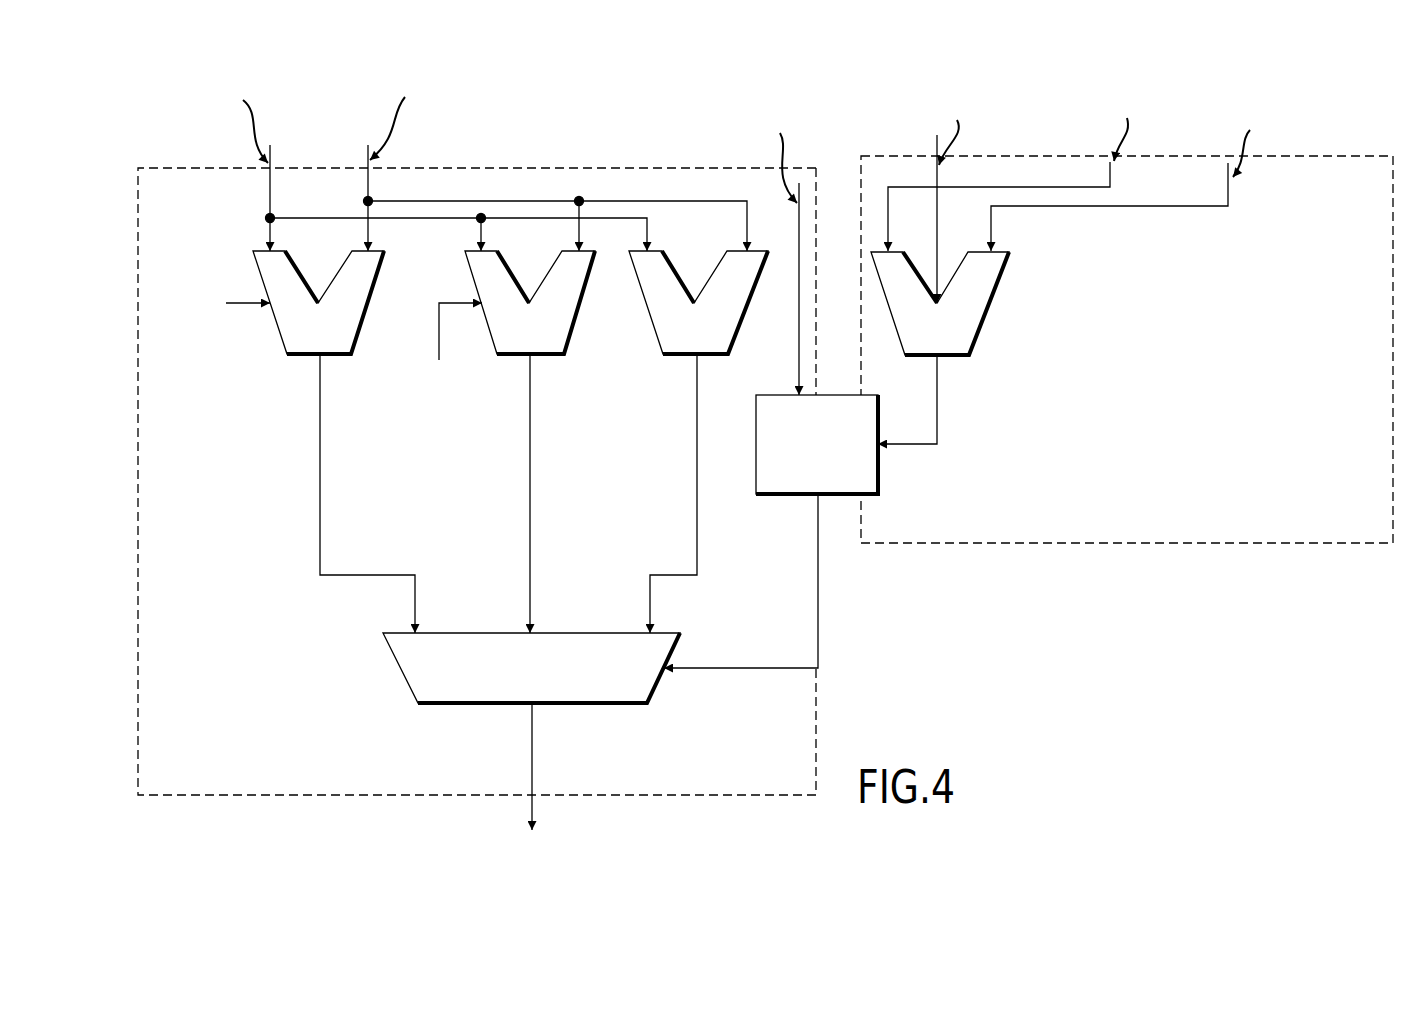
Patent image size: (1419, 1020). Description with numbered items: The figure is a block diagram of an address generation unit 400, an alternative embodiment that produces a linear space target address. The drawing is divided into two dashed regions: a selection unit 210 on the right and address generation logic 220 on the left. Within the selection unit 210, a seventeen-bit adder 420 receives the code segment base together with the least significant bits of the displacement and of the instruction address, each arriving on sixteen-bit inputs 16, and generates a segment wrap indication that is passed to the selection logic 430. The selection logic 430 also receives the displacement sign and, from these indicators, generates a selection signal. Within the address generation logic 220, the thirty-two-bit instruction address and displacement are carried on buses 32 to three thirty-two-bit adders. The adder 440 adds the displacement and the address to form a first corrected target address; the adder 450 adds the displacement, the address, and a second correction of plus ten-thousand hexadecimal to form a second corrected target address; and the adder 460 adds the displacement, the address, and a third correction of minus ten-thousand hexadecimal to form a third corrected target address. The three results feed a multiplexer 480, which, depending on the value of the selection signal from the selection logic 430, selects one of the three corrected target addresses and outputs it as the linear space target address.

The address generation unit 400 is at (655, 124).
The address generation logic 220 is at (821, 725).
The selection unit 210 is at (1129, 551).
The adder (segment wrap indication generator) 420 is at (994, 308).
The selection logic 430 is at (840, 498).
The adder (first adder) 440 is at (713, 357).
The adder (second adder) 450 is at (576, 325).
The adder (third adder) 460 is at (271, 331).
The multiplexer 480 is at (591, 708).
The 32-bit bus 32 is at (262, 195).
The 16-bit bus 16 is at (1100, 177).